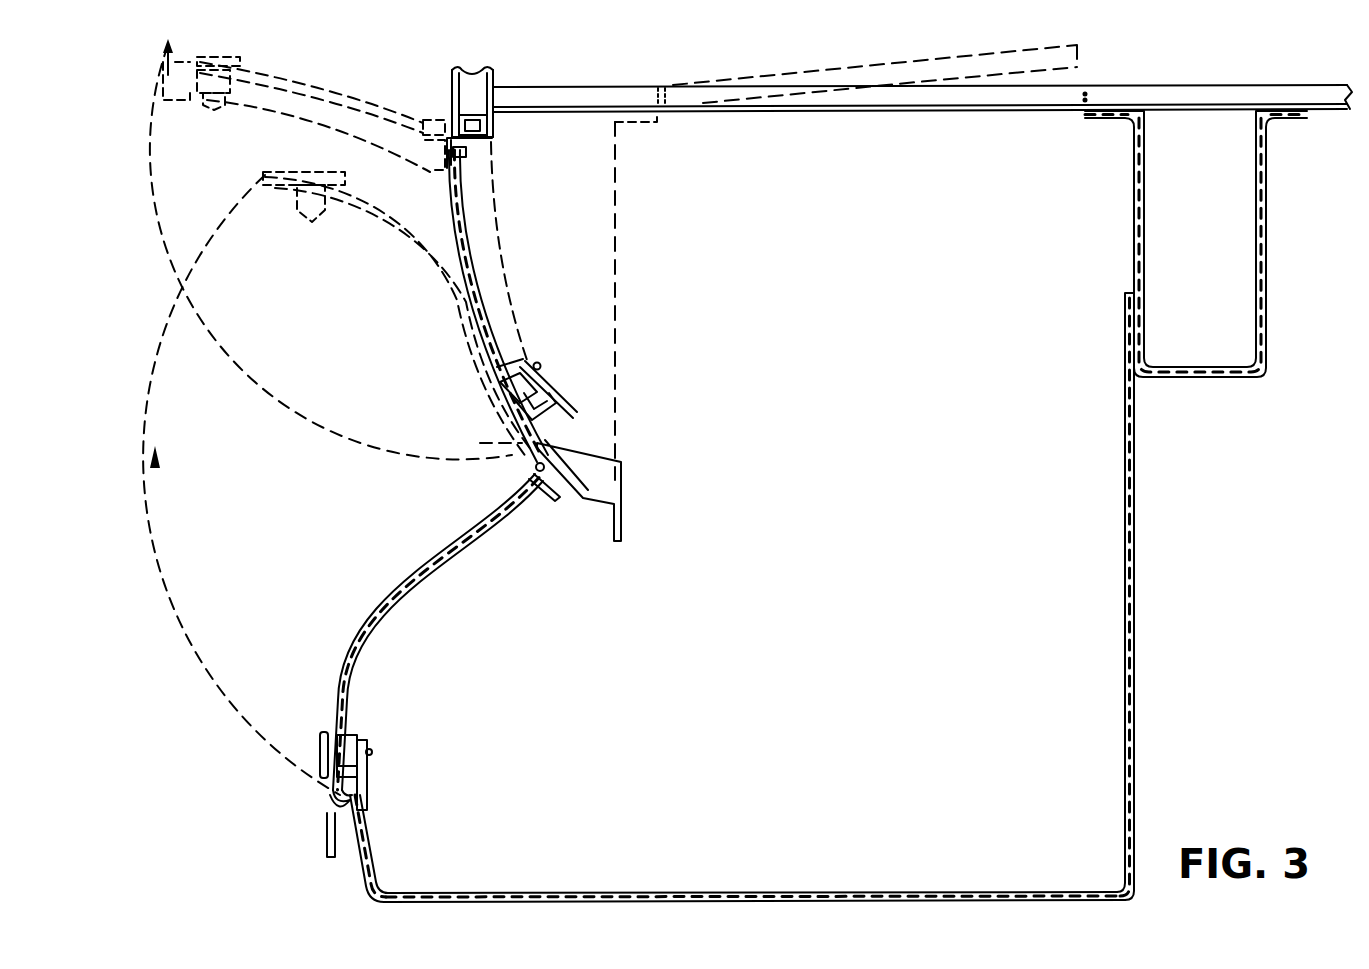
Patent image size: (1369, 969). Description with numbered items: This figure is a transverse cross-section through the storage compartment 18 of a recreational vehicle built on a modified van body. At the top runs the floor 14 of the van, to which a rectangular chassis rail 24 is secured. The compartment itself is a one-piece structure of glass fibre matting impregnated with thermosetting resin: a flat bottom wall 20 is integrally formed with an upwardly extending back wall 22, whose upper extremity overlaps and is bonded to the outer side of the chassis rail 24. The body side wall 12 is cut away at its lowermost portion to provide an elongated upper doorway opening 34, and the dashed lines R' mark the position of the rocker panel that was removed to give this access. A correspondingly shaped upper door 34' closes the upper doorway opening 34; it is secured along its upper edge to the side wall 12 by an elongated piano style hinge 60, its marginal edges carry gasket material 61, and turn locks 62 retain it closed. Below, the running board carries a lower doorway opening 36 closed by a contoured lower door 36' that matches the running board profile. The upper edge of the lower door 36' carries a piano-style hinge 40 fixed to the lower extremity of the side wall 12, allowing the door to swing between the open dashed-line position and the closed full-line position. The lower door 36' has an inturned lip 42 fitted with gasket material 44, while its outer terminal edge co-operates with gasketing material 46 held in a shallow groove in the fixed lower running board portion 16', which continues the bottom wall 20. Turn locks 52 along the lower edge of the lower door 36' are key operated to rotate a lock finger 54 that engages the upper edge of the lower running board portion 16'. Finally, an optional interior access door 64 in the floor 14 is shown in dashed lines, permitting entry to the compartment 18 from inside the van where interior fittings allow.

The side wall 12 is at (468, 86).
The floor 14 is at (1003, 112).
The lower running board portion 16' is at (405, 848).
The storage compartment 18 is at (858, 424).
The bottom wall 20 is at (818, 893).
The back wall 22 is at (1124, 663).
The chassis rail 24 is at (1267, 282).
The upper doorway opening 34 is at (510, 302).
The upper door 34' is at (331, 249).
The lower doorway opening 36 is at (438, 632).
The lower door 36' is at (259, 485).
The piano-style hinge 40 is at (530, 470).
The inturned lip 42 is at (550, 497).
The gasket material 44 is at (565, 468).
The gasketing material 46 is at (330, 804).
The turn lock 52 is at (342, 738).
The lock finger 54 is at (368, 776).
The piano style hinge 60 is at (398, 137).
The gasket material 61 is at (490, 140).
The turn lock 62 is at (512, 365).
The interior access door 64 is at (788, 77).
The rocker panel position R' is at (646, 301).